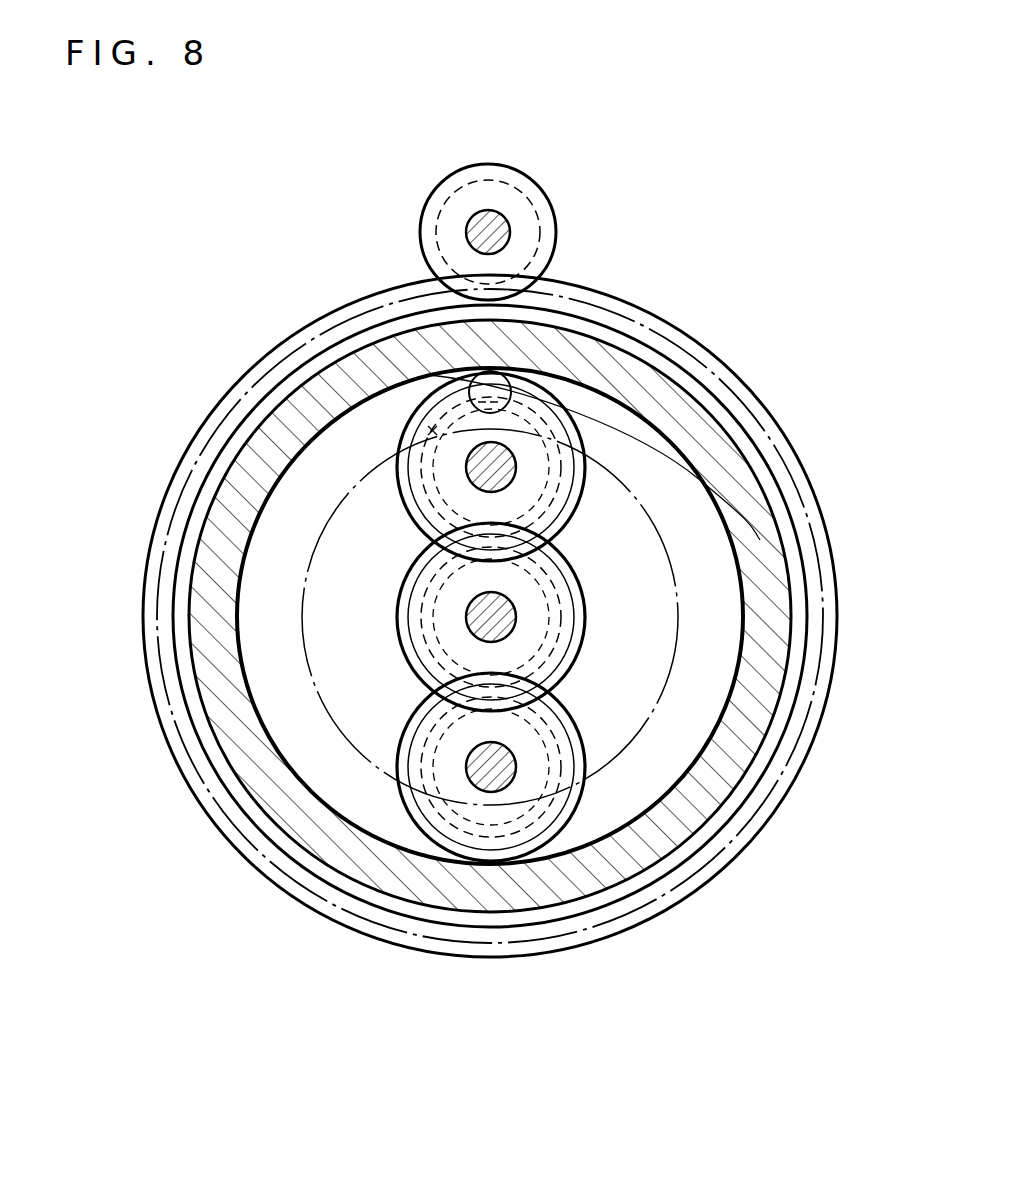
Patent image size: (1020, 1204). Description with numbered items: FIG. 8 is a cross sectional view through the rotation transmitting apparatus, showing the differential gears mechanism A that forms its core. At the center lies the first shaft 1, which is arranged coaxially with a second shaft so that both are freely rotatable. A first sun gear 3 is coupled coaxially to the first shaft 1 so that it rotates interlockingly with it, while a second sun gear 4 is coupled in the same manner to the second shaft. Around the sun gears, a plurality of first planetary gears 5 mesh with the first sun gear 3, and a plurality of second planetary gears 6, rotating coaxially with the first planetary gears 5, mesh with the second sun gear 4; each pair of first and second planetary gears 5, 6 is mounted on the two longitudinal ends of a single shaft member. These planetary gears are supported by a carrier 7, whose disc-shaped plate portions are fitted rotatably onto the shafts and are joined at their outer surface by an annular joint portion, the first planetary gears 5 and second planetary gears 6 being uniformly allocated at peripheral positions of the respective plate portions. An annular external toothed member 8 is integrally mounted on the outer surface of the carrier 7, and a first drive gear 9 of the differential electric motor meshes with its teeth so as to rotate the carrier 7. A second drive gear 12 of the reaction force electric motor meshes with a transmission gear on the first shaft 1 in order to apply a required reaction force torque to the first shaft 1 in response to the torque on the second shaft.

The first shaft 1 is at (508, 627).
The first sun gear 3 is at (573, 567).
The second sun gear 4 is at (587, 603).
The first planetary gears 5 is at (573, 423).
The second planetary gears 6 is at (600, 466).
The carrier 7 is at (758, 537).
The external toothed member 8 is at (607, 292).
The first drive gear 9 is at (530, 178).
The second drive gear 12 is at (340, 330).
The differential gears mechanism A is at (196, 414).